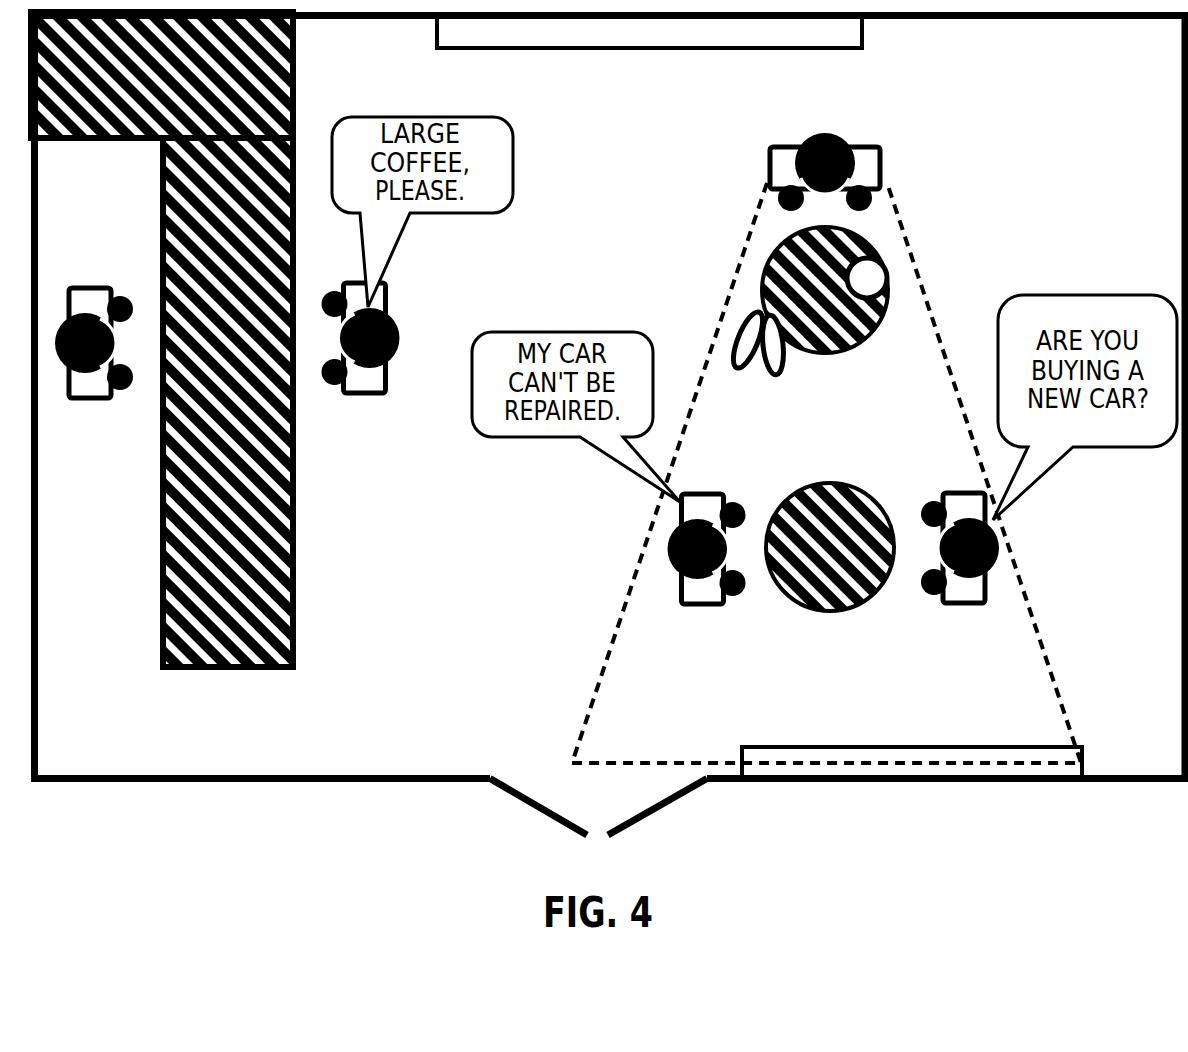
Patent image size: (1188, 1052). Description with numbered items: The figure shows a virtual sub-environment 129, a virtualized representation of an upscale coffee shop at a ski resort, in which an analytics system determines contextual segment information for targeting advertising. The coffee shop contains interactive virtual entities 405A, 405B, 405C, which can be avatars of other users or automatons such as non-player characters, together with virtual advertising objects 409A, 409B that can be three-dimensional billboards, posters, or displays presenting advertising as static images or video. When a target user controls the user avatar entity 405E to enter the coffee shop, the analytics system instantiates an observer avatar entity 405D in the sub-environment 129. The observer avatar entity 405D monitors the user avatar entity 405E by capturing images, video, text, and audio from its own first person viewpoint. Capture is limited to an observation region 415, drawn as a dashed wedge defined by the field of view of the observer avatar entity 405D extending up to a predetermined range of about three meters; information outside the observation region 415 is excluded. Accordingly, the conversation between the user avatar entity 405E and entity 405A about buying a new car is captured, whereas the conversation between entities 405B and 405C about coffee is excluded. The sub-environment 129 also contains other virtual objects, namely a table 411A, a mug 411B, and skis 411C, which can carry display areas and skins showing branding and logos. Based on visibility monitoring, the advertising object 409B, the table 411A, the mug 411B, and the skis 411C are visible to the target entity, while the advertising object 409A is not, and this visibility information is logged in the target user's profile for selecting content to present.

The virtual sub-environment 129 is at (1172, 767).
The interactive virtual entity 405A is at (995, 525).
The interactive virtual entity 405B is at (398, 328).
The interactive virtual entity 405C is at (96, 400).
The observer avatar entity 405D is at (795, 142).
The user avatar entity 405E is at (665, 545).
The advertising object 409A is at (852, 48).
The advertising object 409B is at (742, 753).
The table 411A is at (775, 255).
The mug 411B is at (878, 277).
The skis 411C is at (745, 314).
The observation region 415 is at (895, 209).